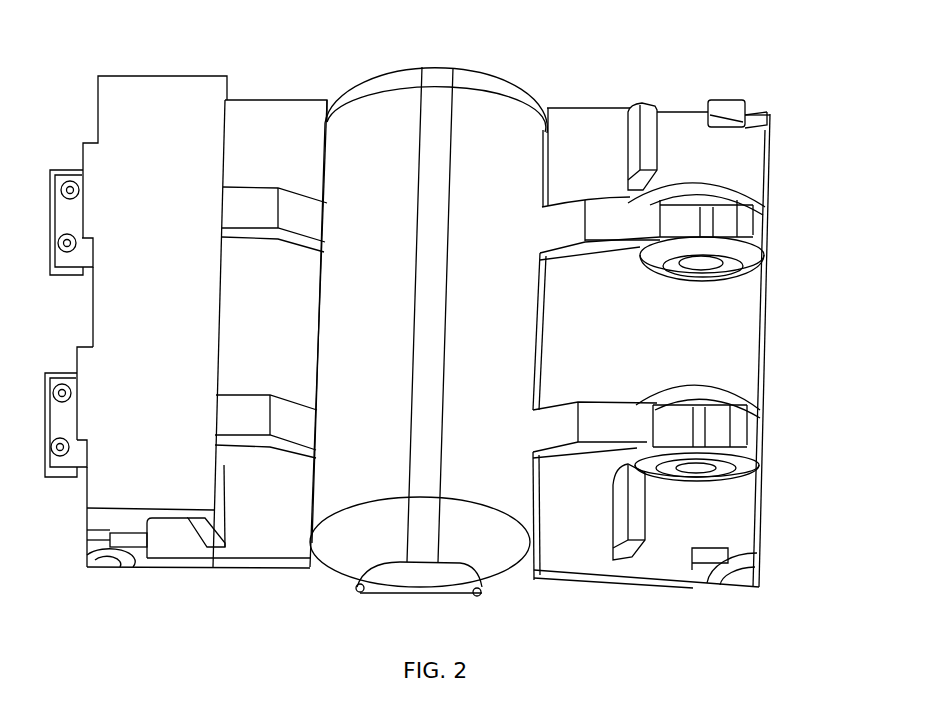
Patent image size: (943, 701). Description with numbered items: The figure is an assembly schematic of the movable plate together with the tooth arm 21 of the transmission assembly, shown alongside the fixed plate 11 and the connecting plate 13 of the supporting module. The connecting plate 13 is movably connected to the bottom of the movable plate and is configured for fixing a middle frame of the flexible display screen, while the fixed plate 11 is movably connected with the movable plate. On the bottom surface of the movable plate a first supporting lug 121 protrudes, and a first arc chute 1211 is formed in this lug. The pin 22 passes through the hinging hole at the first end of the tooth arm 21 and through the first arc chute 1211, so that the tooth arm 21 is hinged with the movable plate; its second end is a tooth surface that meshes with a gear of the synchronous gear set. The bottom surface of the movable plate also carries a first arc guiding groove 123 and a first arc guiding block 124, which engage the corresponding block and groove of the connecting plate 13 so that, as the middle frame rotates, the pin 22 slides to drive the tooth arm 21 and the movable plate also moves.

The connecting plate 13 is at (160, 120).
The fixed plate 11 is at (473, 130).
The tooth arm 21 is at (597, 225).
The first arc guiding block 124 is at (638, 142).
The first arc guiding groove 123 is at (750, 113).
The first supporting lug 121 is at (718, 195).
The pin 22 is at (735, 277).
The first arc chute 1211 is at (702, 260).